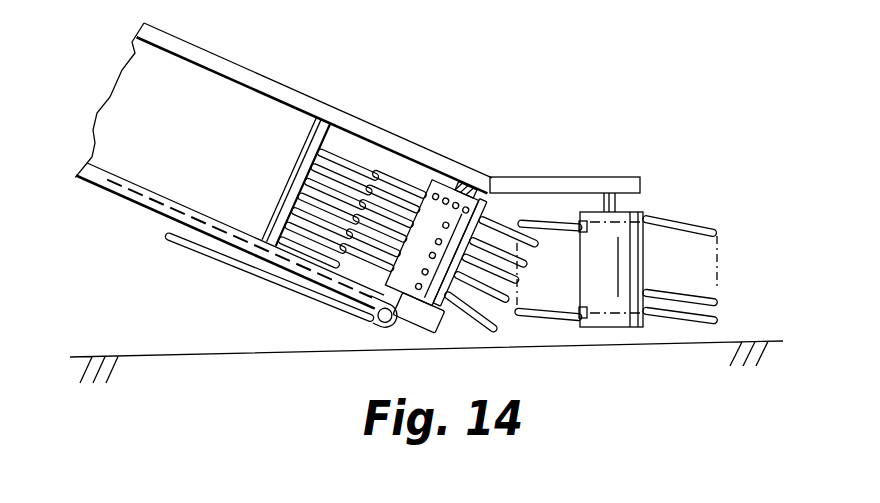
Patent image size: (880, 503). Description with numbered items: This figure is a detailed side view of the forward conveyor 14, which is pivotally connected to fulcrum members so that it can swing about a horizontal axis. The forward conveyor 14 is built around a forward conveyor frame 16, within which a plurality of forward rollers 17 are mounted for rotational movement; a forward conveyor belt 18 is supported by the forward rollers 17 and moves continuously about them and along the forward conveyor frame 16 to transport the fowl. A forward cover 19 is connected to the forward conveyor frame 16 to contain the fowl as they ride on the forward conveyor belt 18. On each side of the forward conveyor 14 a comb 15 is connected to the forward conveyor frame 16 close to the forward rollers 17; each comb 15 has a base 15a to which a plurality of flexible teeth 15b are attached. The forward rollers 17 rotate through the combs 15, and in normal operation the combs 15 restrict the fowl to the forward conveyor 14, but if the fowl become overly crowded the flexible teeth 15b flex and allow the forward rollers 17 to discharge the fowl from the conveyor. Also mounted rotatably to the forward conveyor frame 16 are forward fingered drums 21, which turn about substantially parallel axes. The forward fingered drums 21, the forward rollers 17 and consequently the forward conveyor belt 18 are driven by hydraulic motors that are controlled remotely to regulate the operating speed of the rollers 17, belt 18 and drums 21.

The forward conveyor 14 is at (223, 57).
The comb 15 is at (345, 151).
The base 15a is at (311, 134).
The flexible teeth 15b is at (365, 170).
The forward conveyor frame 16 is at (540, 177).
The forward rollers 17 is at (376, 319).
The forward conveyor belt 18 is at (244, 266).
The forward cover 19 is at (122, 135).
The forward fingered drums 21 is at (485, 191).